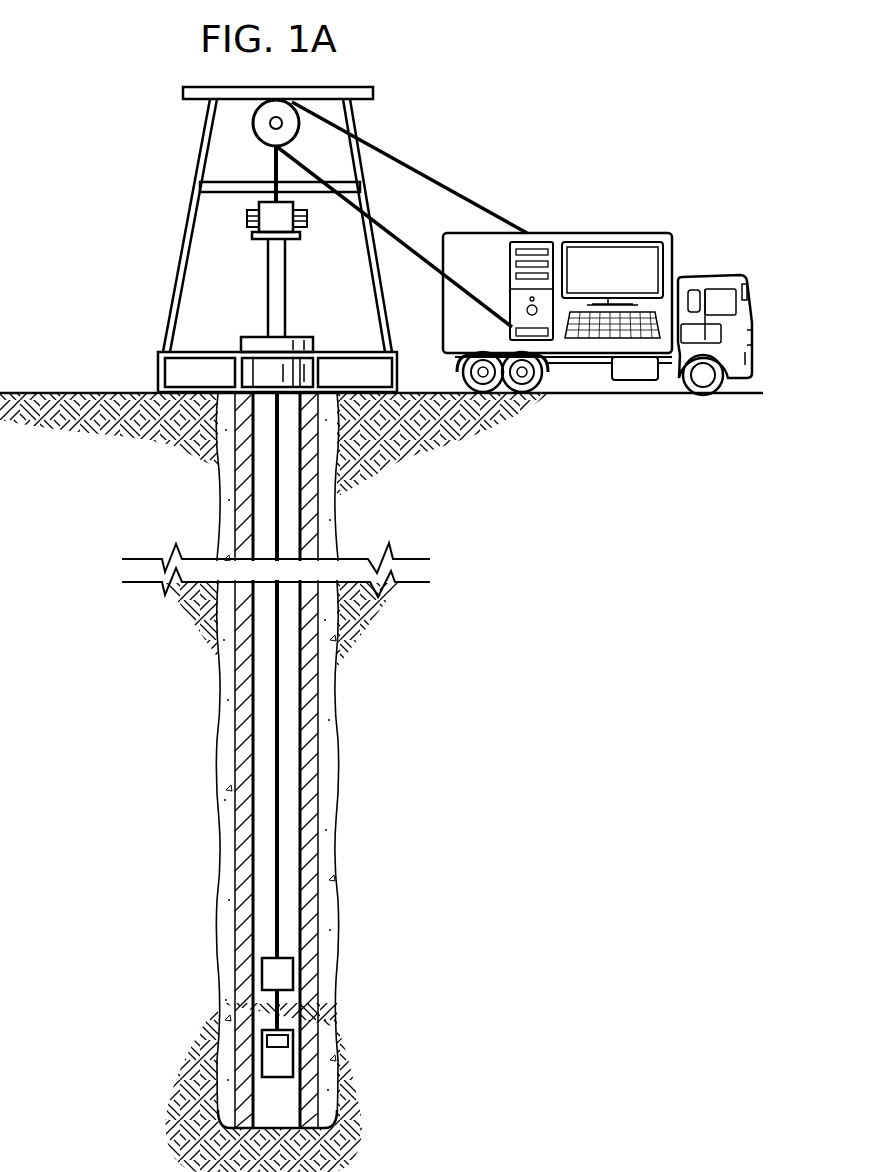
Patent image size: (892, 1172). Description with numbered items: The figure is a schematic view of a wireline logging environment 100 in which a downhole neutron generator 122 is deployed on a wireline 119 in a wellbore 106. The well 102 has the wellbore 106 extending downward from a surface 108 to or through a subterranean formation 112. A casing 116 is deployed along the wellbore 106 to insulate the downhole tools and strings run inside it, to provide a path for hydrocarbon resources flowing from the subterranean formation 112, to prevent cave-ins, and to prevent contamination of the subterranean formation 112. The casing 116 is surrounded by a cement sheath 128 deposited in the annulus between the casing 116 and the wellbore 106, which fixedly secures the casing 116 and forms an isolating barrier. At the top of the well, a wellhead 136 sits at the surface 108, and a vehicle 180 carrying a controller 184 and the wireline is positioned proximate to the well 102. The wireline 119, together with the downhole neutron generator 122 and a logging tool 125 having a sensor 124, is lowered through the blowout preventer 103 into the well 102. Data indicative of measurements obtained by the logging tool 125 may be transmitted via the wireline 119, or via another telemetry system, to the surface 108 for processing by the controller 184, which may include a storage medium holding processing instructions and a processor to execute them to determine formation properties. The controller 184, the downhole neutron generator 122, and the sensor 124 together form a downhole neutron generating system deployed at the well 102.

The wireline logging environment 100 is at (99, 53).
The well 102 is at (299, 334).
The blowout preventer 103 is at (268, 272).
The wellbore 106 is at (334, 736).
The surface 108 is at (70, 393).
The subterranean formation 112 is at (547, 680).
The casing 116 is at (313, 818).
The wireline 119 is at (276, 167).
The downhole neutron generator 122 is at (262, 976).
The sensor 124 is at (267, 1040).
The logging tool 125 is at (287, 1058).
The cement sheath 128 is at (328, 698).
The wellhead 136 is at (250, 337).
The vehicle 180 is at (590, 233).
The controller 184 is at (533, 242).